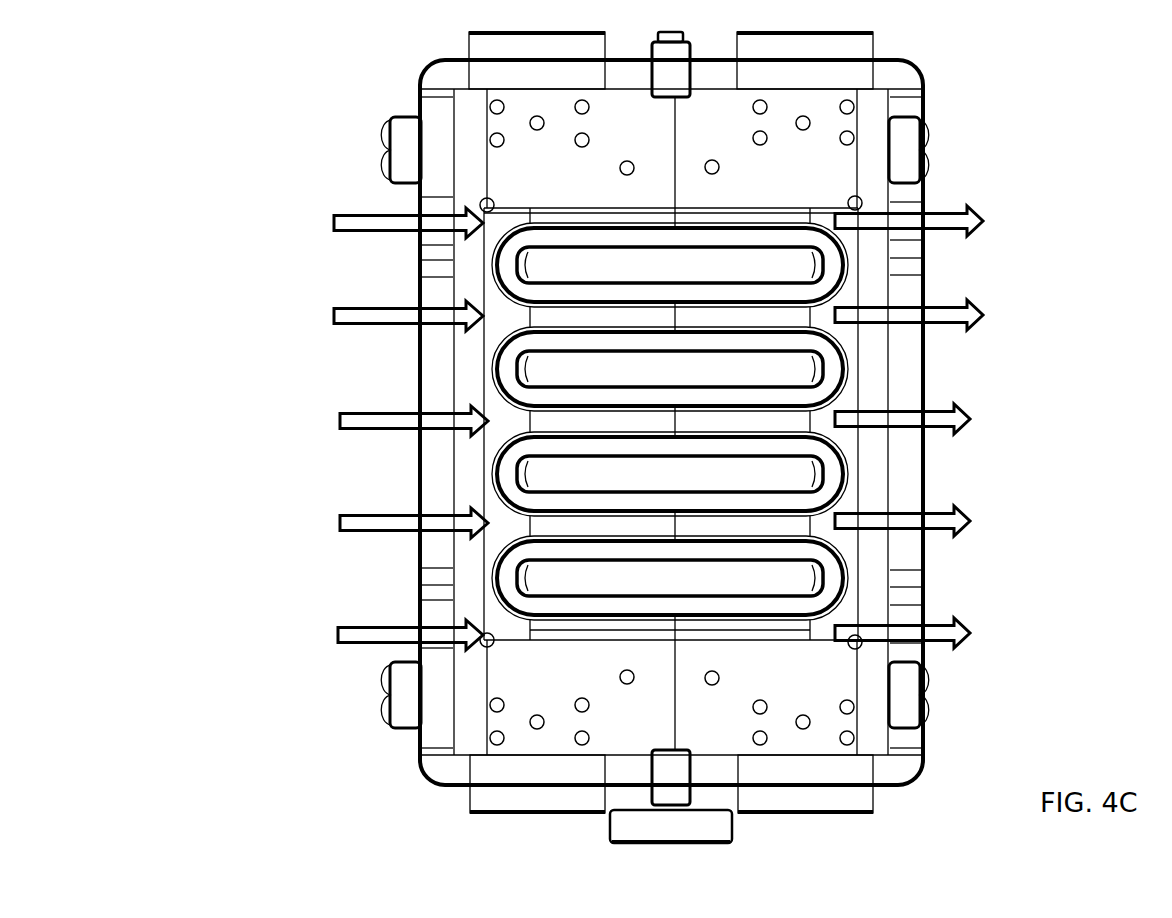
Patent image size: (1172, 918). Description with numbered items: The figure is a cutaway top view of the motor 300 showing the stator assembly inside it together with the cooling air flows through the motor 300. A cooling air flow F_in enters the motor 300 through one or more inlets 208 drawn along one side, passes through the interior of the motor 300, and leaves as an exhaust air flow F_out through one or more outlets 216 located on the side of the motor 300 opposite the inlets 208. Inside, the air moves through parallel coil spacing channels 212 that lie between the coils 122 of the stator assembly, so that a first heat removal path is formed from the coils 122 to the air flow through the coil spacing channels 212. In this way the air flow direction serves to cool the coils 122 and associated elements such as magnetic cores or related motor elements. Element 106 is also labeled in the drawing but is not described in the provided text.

The motor 300 is at (688, 437).
The inlets 208 is at (423, 258).
The outlets 216 is at (923, 257).
The coil spacing channels 212 is at (534, 424).
The conduit 106 is at (547, 570).
The coils 122 is at (529, 559).